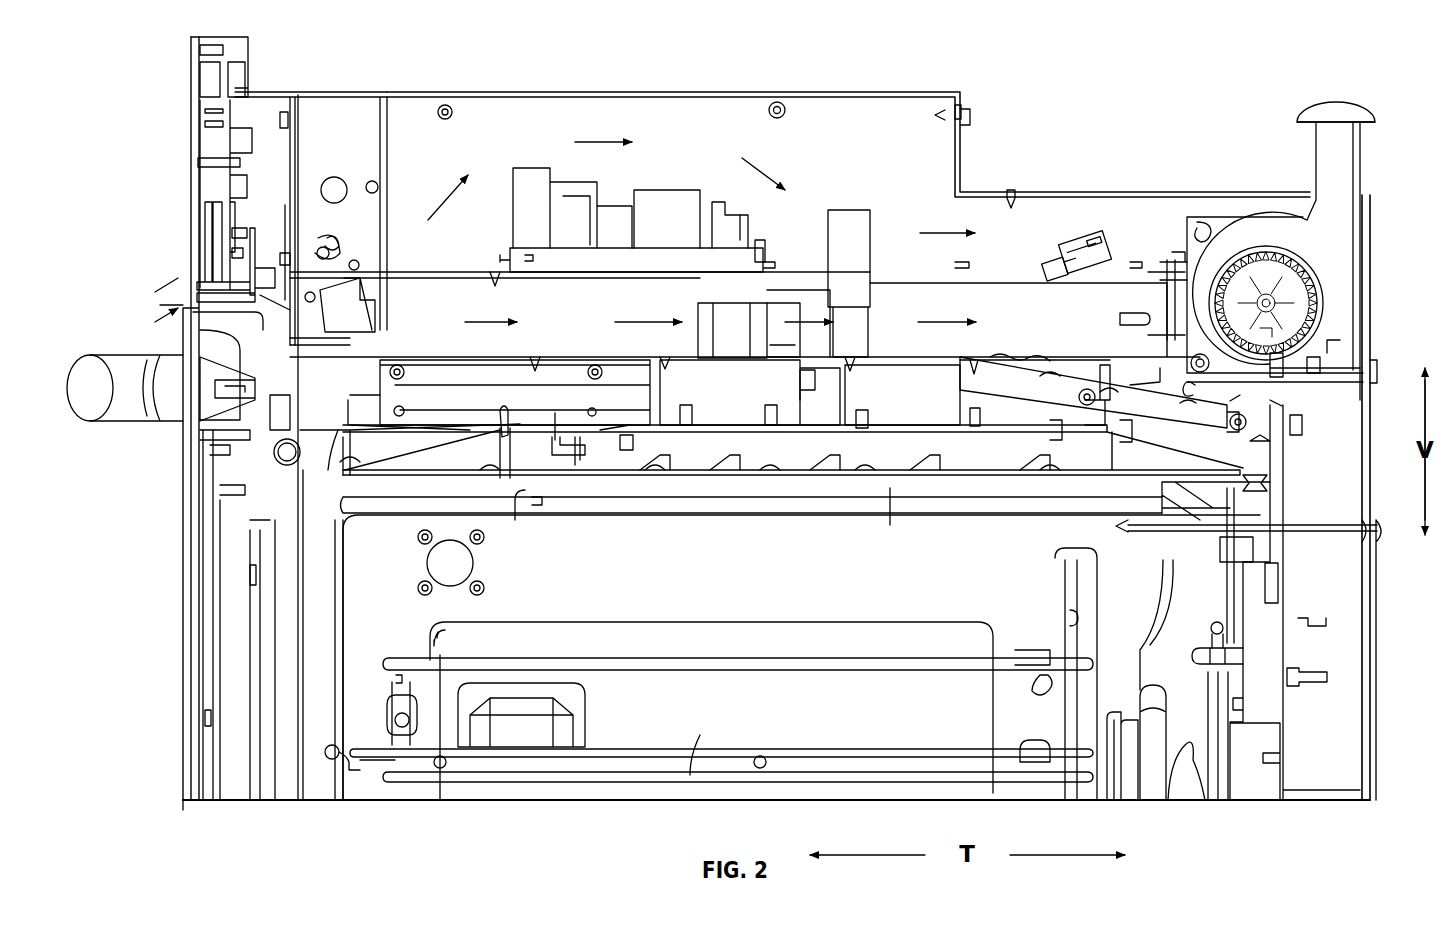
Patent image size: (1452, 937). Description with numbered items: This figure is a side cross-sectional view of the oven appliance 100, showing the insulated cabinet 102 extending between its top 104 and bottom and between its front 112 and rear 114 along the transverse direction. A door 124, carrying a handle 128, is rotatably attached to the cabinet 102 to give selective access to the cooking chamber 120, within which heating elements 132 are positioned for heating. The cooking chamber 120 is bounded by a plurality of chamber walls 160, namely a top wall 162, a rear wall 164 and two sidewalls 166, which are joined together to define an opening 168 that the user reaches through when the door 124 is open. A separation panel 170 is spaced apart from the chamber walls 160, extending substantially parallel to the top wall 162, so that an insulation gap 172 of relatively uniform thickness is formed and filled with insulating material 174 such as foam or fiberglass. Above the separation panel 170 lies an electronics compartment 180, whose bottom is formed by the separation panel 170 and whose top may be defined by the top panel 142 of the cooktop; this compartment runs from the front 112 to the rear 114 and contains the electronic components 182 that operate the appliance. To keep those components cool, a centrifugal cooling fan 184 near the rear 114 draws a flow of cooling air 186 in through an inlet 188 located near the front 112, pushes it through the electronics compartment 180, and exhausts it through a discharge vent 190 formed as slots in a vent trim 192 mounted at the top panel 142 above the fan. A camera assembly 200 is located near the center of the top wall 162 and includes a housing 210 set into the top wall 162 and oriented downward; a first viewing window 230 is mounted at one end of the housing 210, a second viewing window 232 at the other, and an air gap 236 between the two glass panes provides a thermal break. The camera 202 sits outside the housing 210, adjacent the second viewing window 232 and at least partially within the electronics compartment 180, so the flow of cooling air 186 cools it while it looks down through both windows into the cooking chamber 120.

The oven appliance 100 is at (1182, 87).
The cabinet 102 is at (1367, 572).
The top 104 is at (357, 88).
The front 112 is at (182, 738).
The rear 114 is at (1376, 680).
The cooking chamber 120 is at (698, 716).
The door 124 is at (183, 522).
The handle 128 is at (94, 360).
The heating elements 132 is at (513, 505).
The top panel 142 is at (652, 92).
The chamber walls 160 is at (1228, 579).
The top wall 162 is at (918, 440).
The rear wall 164 is at (1225, 593).
The sidewalls 166 is at (363, 711).
The opening 168 is at (264, 700).
The separation panel 170 is at (1006, 360).
The insulation gap 172 is at (558, 422).
The insulating material 174 is at (622, 410).
The electronics compartment 180 is at (866, 152).
The electronic components 182 is at (548, 262).
The cooling fan 184 is at (1320, 292).
The flow of cooling air 186 is at (764, 164).
The inlet 188 is at (208, 304).
The discharge vent 190 is at (1304, 100).
The vent trim 192 is at (1375, 120).
The camera assembly 200 is at (770, 470).
The camera 202 is at (718, 296).
The housing 210 is at (808, 388).
The first viewing window 230 is at (806, 395).
The second viewing window 232 is at (782, 353).
The air gap 236 is at (736, 410).